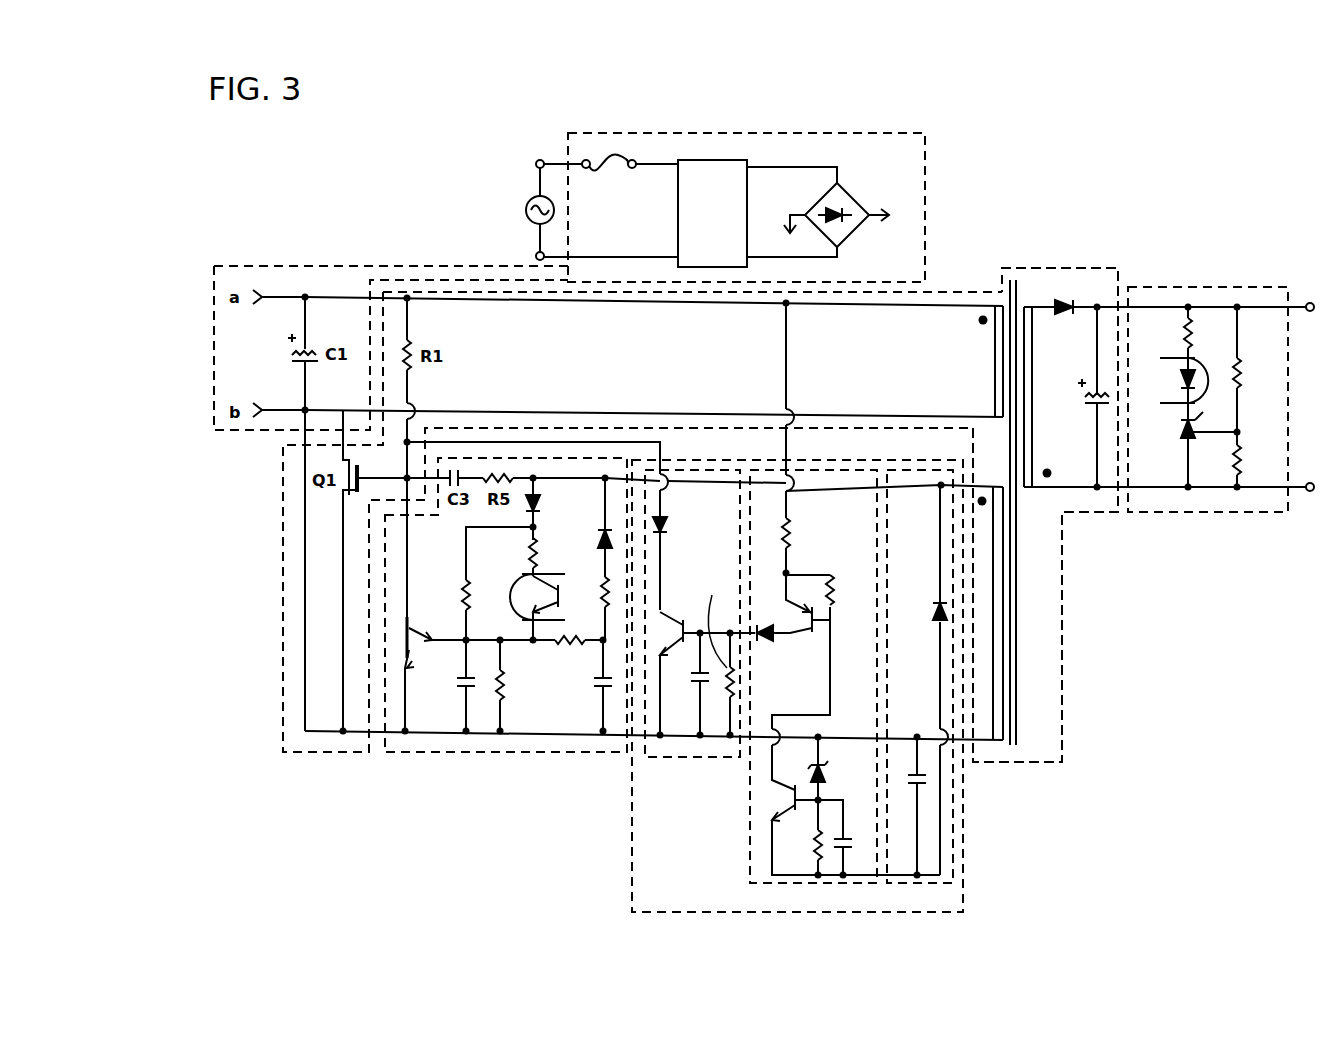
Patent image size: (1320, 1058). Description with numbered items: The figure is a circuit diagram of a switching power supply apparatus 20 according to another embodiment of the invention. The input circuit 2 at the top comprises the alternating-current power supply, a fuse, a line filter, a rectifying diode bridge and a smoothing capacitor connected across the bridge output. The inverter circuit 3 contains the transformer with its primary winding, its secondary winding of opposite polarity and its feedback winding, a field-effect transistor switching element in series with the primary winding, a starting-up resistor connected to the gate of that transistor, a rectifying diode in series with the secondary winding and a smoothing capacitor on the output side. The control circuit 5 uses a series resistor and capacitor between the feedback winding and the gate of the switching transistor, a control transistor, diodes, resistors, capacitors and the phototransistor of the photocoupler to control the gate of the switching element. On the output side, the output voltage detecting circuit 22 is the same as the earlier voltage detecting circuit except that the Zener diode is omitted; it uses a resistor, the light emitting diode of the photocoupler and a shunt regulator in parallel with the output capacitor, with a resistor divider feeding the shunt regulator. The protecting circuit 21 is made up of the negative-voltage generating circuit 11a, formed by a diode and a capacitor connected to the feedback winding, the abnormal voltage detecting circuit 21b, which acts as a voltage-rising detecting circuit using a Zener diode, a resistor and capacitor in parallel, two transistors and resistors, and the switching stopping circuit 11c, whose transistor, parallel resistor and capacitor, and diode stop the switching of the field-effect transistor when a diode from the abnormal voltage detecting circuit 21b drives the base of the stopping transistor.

The input circuit 2 is at (768, 131).
The inverter circuit 3 is at (1069, 262).
The control circuit 5 is at (485, 784).
The negative-voltage generating circuit 11a is at (934, 909).
The switching stopping circuit 11c is at (700, 784).
The switching power supply apparatus 20 is at (960, 220).
The protecting circuit 21 is at (806, 935).
The abnormal voltage detecting circuit 21b is at (825, 909).
The output voltage detecting circuit 22 is at (1236, 285).